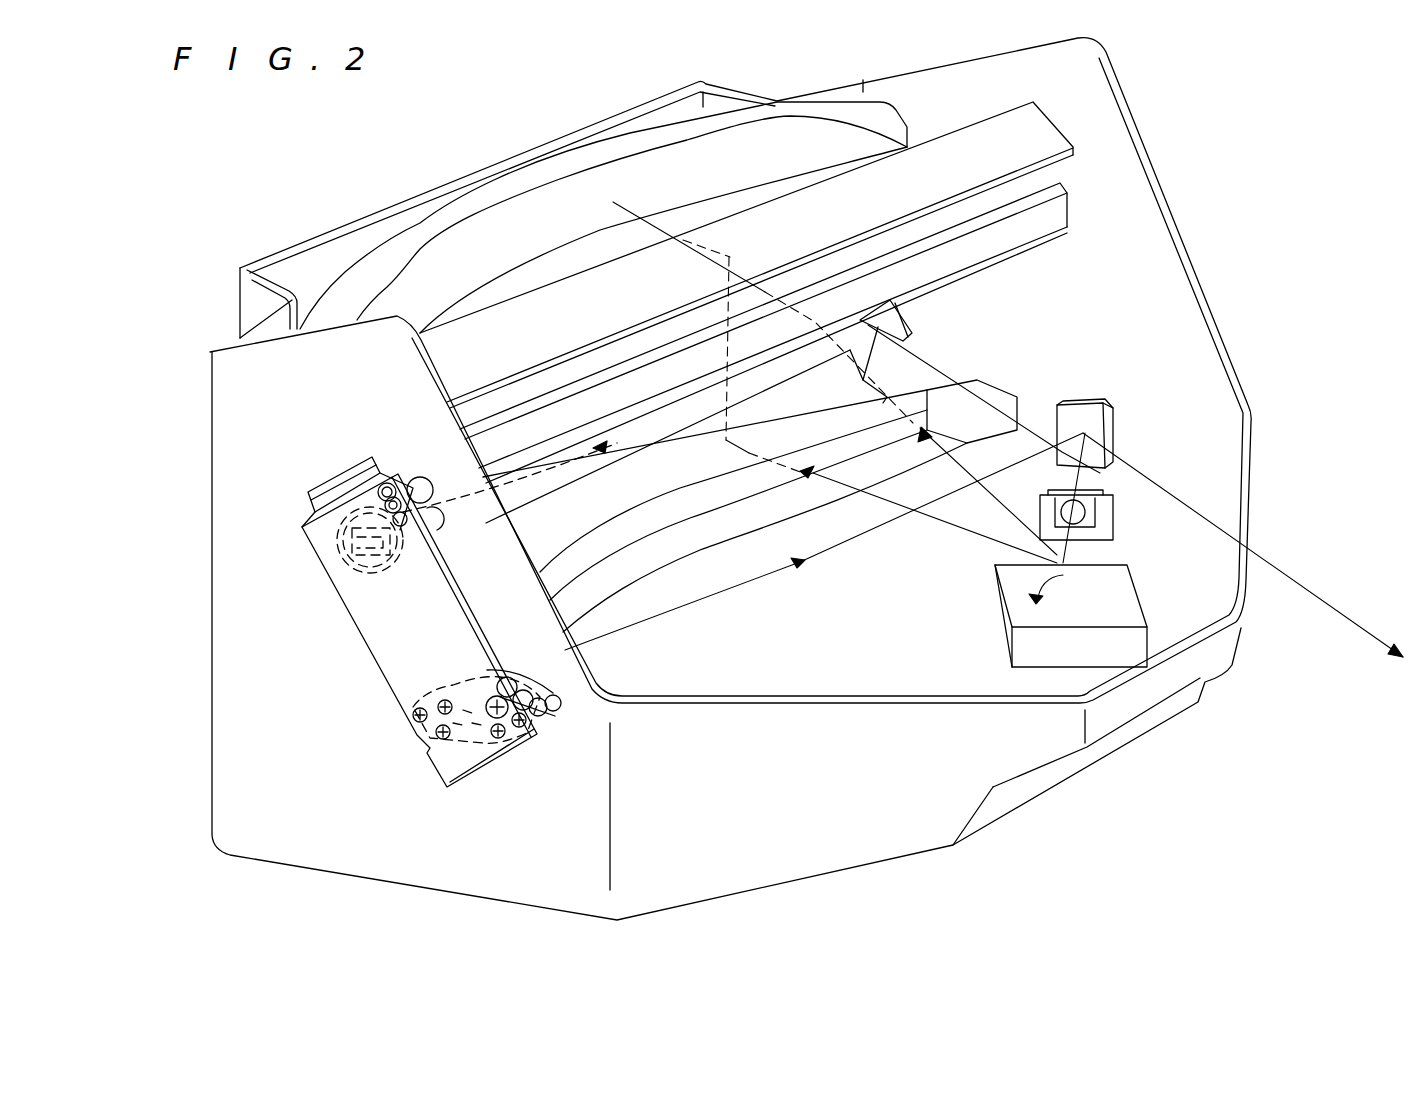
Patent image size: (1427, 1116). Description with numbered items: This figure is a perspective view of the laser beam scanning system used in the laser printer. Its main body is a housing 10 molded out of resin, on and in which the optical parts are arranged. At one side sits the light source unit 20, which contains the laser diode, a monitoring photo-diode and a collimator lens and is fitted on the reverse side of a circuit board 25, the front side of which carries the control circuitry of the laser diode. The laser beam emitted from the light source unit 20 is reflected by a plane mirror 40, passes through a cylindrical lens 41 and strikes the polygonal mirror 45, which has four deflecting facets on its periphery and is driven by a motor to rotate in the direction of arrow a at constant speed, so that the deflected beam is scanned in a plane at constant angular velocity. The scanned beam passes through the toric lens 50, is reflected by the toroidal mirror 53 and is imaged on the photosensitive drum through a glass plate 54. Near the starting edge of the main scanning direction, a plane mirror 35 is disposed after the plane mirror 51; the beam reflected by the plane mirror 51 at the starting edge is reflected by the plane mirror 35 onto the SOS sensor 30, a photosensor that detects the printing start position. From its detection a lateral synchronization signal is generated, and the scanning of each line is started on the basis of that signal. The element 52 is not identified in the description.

The housing 10 is at (1192, 258).
The light source unit 20 is at (537, 670).
The circuit board 25 is at (373, 661).
The photosensor (SOS sensor) 30 is at (430, 553).
The plane mirror 35 is at (895, 320).
The plane mirror 40 is at (1077, 418).
The cylindrical lens 41 is at (1093, 487).
The polygonal mirror 45 is at (993, 607).
The toric lens 50 is at (743, 497).
The plane mirror 51 is at (637, 487).
The upper rail 52 is at (997, 133).
The toroidal mirror 53 is at (573, 200).
The glass plate 54 is at (1028, 230).